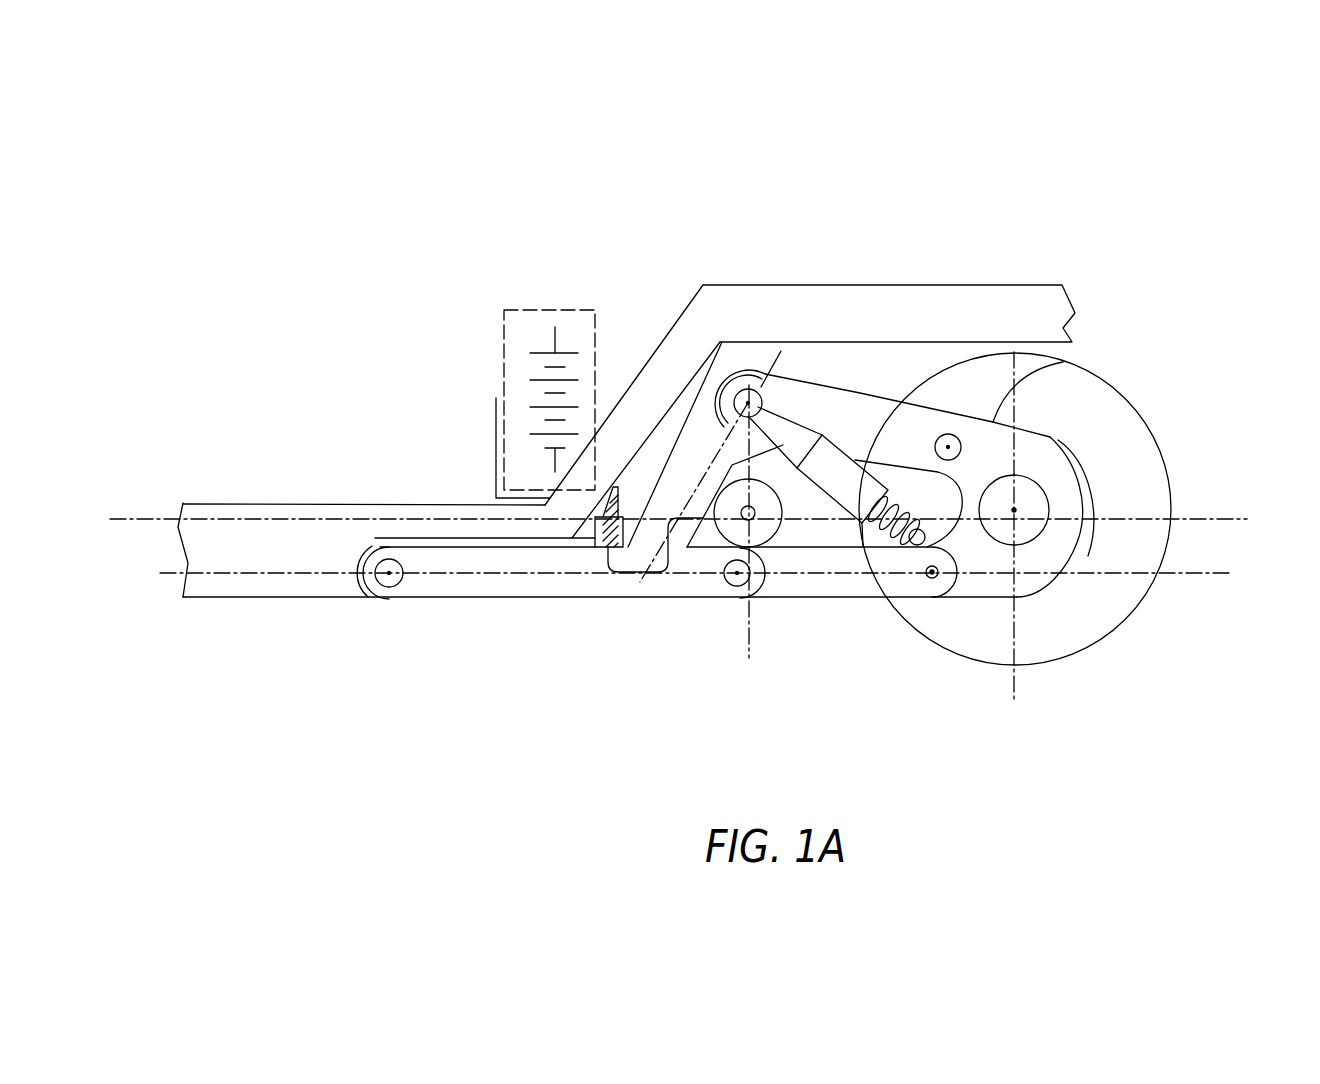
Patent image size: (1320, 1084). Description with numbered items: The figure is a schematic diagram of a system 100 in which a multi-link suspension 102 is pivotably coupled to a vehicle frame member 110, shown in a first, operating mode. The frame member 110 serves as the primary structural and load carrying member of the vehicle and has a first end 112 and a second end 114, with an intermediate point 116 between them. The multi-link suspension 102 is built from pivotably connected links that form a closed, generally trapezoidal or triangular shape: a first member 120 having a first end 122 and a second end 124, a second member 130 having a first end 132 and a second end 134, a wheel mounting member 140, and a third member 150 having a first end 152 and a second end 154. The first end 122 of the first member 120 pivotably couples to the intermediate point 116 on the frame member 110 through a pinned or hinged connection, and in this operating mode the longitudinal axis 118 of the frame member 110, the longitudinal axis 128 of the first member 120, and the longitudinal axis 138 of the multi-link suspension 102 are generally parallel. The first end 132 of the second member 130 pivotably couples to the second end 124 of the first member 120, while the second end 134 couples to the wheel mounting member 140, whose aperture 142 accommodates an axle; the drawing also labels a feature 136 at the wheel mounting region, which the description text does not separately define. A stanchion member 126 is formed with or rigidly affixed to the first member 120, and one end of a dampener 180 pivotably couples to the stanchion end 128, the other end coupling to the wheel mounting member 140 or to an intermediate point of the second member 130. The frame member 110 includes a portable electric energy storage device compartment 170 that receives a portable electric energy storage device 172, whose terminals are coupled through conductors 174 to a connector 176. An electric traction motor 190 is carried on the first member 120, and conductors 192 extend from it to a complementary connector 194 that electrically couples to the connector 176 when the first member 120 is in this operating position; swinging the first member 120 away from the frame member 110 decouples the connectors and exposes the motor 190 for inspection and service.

The system 100 is at (1153, 188).
The multi-link suspension 102 is at (458, 678).
The frame member 110 is at (279, 556).
The first end of the frame member 112 is at (187, 504).
The second end of the frame member 114 is at (1062, 285).
The intermediate point 116 is at (389, 573).
The longitudinal axis of the frame member 118 is at (1207, 520).
The first member 120 is at (603, 592).
The first end of the first member 122 is at (389, 573).
The second end of the first member 124 is at (730, 598).
The stanchion member 126 is at (722, 443).
The longitudinal axis of the first member 128 is at (745, 372).
The second member 130 is at (872, 583).
The first end of the second member 132 is at (753, 598).
The second end of the second member 134 is at (940, 598).
The rear hub 136 is at (1073, 467).
The longitudinal axis of the multi-link suspension 138 is at (1172, 573).
The wheel mounting member 140 is at (1052, 553).
The aperture 142 is at (1014, 510).
The third member 150 is at (853, 410).
The first end of the third member 152 is at (1063, 362).
The second end of the third member 154 is at (785, 360).
The portable electric energy storage device compartment 170 is at (496, 443).
The portable electric energy storage device 172 is at (551, 310).
The conductor 174 is at (612, 487).
The connector 176 is at (623, 507).
The dampener 180 is at (855, 460).
The electric traction motor 190 is at (783, 523).
The conductor 192 is at (640, 572).
The complementary connector 194 is at (607, 555).